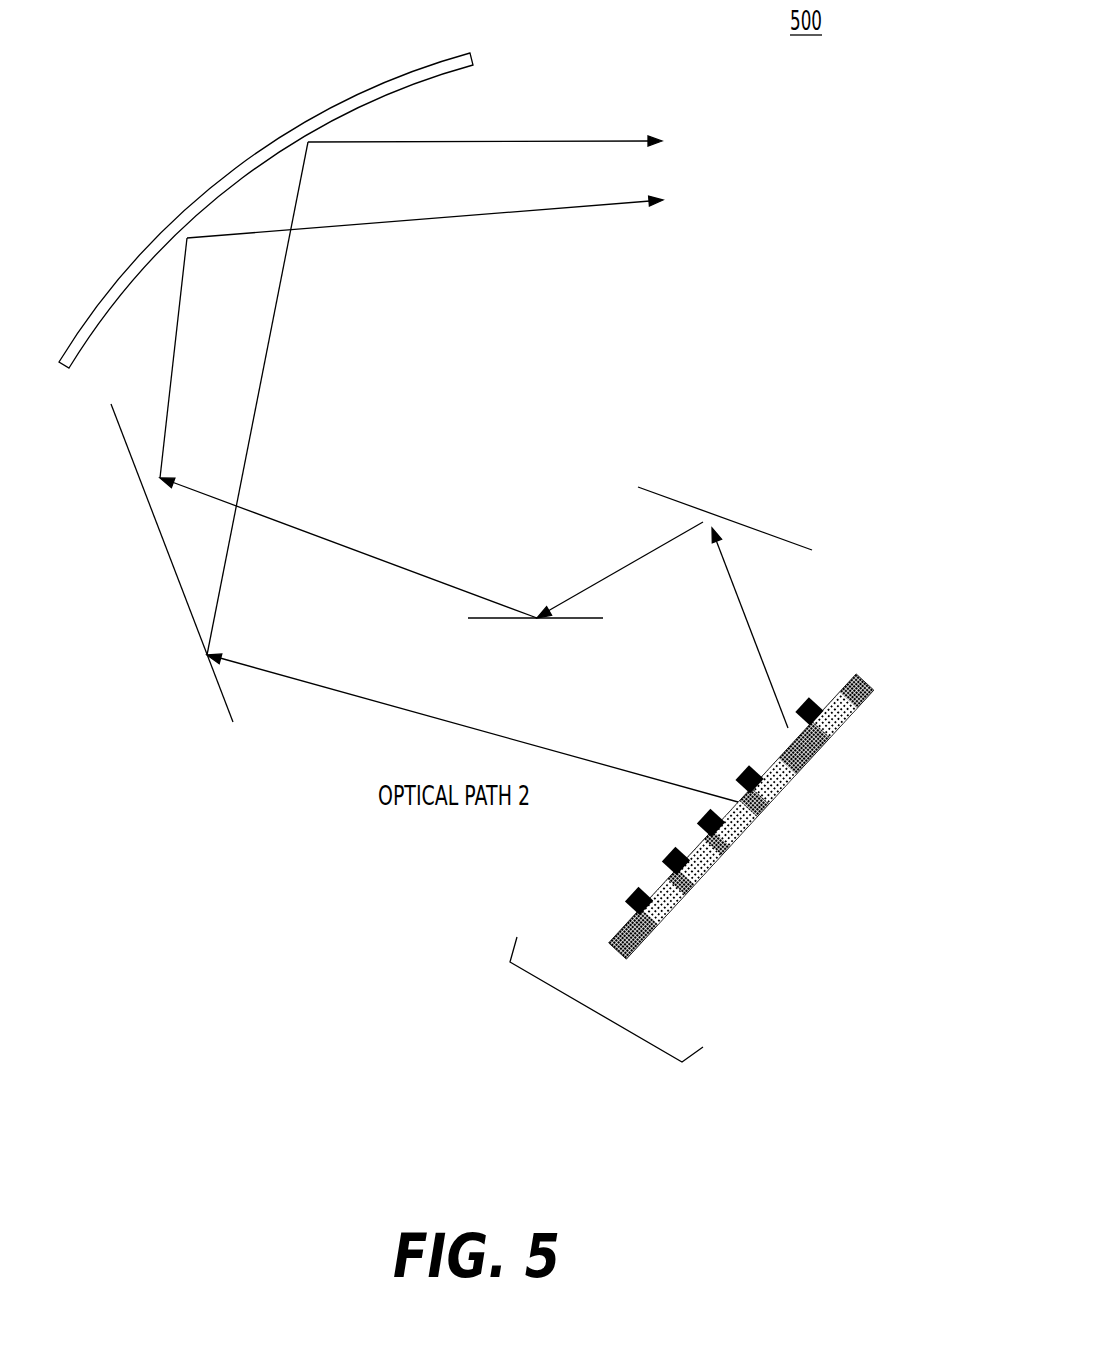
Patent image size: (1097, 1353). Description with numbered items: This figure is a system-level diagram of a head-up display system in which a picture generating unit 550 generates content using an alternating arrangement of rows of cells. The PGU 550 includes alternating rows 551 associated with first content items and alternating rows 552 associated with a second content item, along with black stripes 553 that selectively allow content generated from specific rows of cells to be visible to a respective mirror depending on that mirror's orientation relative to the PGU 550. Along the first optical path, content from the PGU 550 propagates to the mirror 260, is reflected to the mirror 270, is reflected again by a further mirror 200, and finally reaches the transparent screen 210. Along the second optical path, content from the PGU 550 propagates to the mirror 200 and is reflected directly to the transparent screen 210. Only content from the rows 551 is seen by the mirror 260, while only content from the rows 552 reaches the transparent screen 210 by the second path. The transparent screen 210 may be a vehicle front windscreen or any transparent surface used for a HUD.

The transparent screen 210 is at (225, 173).
The mirror 200 is at (158, 532).
The mirror 260 is at (722, 515).
The mirror 270 is at (556, 620).
The picture generating unit 550 is at (600, 1013).
The alternating rows 551 is at (880, 688).
The alternating rows 552 is at (790, 740).
The black stripes 553 is at (807, 700).